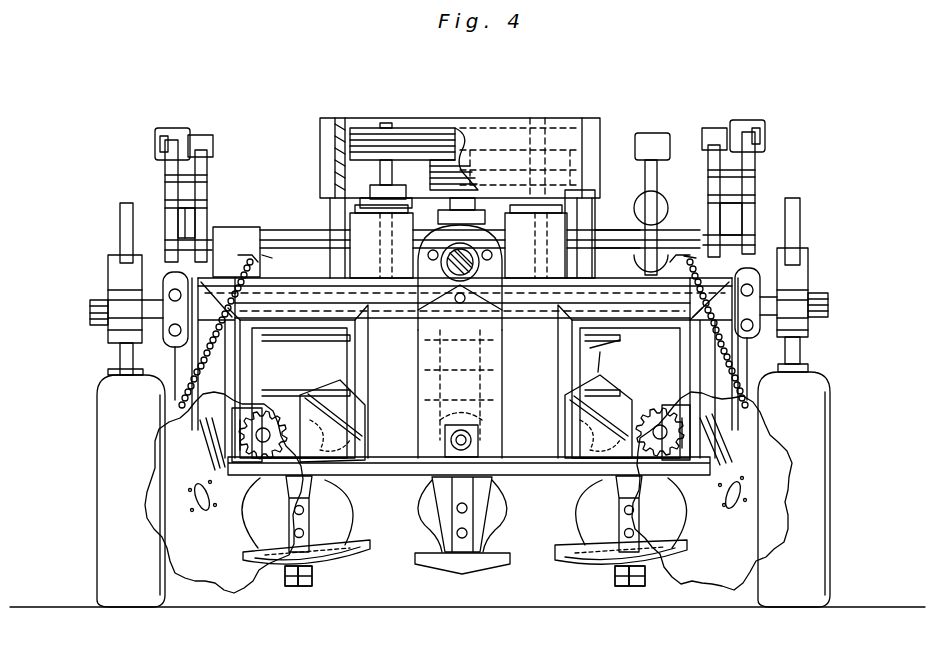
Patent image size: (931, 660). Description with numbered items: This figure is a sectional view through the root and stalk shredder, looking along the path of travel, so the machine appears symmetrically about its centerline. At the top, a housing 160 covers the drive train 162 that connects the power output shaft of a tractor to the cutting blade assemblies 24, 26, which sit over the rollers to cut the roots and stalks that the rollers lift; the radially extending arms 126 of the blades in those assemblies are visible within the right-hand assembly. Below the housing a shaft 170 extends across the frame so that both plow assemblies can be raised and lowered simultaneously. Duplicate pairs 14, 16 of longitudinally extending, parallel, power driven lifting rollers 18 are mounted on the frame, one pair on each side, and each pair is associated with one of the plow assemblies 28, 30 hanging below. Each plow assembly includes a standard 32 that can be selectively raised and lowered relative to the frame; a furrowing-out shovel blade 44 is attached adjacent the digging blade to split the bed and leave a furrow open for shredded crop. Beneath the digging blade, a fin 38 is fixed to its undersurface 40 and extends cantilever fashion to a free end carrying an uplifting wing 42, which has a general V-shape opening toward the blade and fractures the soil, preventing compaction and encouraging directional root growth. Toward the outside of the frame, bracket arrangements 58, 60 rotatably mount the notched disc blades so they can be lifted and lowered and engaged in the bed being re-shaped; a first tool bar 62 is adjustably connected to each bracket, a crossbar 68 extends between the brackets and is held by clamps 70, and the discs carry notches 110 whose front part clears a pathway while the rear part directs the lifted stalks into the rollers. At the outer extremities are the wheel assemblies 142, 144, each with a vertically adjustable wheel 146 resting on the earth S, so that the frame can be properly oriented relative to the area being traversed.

The earth S is at (48, 606).
The pair of lifting rollers 14 is at (290, 468).
The pair of lifting rollers 16 is at (640, 462).
The lifting roller 18 is at (290, 415).
The blade assembly 24 is at (330, 345).
The blade assembly 26 is at (620, 360).
The plow assembly 28 is at (338, 568).
The plow assembly 30 is at (600, 566).
The standard 32 is at (183, 362).
The fin 38 is at (291, 586).
The undersurface 40 is at (273, 560).
The uplifting wing 42 is at (306, 586).
The furrowing-out shovel blade 44 is at (333, 498).
The bracket arrangement 58 is at (150, 186).
The bracket arrangement 60 is at (766, 170).
The first tool bar 62 is at (120, 240).
The crossbar 68 is at (103, 320).
The clamp 70 is at (103, 280).
The notch 110 is at (168, 490).
The radially extending arm 126 is at (598, 350).
The wheel assembly 142 is at (95, 440).
The wheel assembly 144 is at (832, 488).
The wheel 146 is at (105, 497).
The housing 160 is at (568, 130).
The drive train 162 is at (432, 128).
The shaft 170 is at (298, 232).